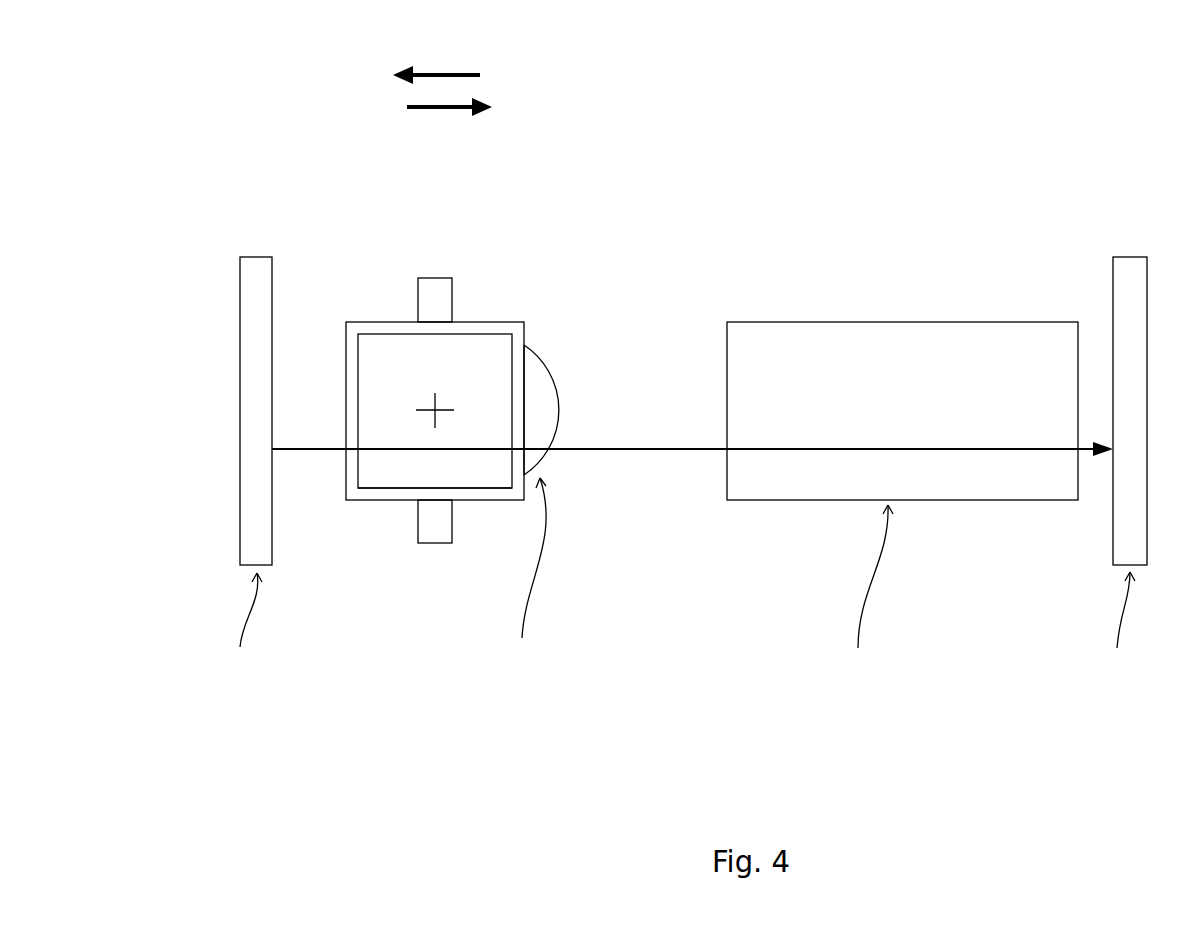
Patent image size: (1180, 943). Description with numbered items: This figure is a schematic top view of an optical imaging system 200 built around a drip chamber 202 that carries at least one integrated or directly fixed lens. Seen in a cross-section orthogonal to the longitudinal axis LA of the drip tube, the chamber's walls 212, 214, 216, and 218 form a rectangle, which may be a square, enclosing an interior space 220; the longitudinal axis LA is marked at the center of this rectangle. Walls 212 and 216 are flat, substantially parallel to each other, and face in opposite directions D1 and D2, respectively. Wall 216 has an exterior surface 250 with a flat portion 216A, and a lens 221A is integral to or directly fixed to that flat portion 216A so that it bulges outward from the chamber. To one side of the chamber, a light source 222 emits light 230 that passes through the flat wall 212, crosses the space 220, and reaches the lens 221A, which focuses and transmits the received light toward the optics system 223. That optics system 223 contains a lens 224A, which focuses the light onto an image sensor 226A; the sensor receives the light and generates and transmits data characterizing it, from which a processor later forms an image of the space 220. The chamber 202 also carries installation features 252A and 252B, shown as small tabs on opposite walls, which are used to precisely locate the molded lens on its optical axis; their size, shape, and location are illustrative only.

The optical imaging system 200 is at (1022, 87).
The drip chamber 202 is at (422, 432).
The wall 212 is at (265, 399).
The wall 214 is at (387, 322).
The wall 216 is at (572, 329).
The flat portion of wall 216A is at (524, 437).
The wall 218 is at (468, 500).
The space 220 is at (381, 348).
The lens 221A is at (555, 387).
The light source 222 is at (240, 505).
The optics system 223 is at (902, 350).
The lens 224A is at (902, 411).
The image sensor 226A is at (1132, 257).
The light 230 is at (633, 449).
The exterior surface 250 is at (588, 329).
The installation feature 252A is at (437, 543).
The installation feature 252B is at (432, 278).
The longitudinal axis LA is at (433, 413).
The direction D1 is at (437, 75).
The direction D2 is at (437, 107).